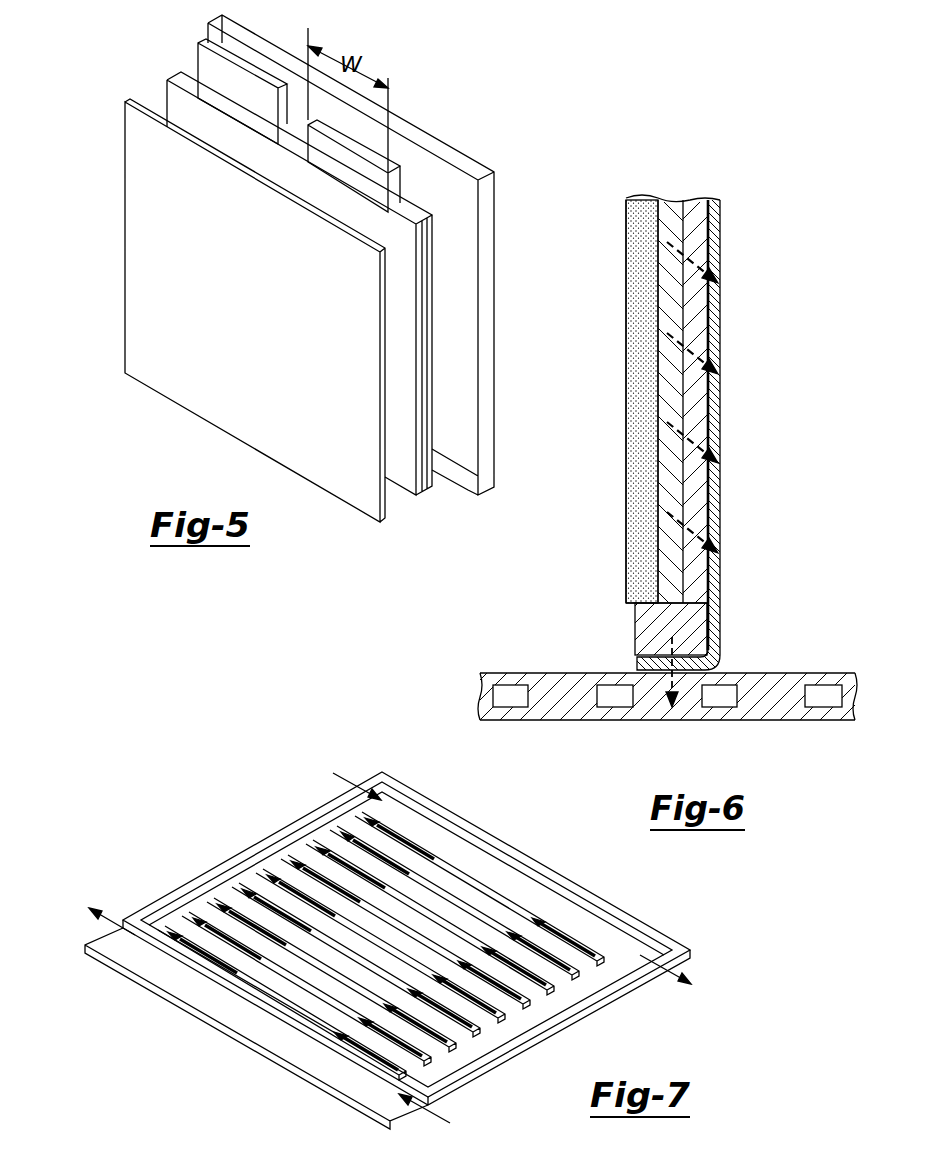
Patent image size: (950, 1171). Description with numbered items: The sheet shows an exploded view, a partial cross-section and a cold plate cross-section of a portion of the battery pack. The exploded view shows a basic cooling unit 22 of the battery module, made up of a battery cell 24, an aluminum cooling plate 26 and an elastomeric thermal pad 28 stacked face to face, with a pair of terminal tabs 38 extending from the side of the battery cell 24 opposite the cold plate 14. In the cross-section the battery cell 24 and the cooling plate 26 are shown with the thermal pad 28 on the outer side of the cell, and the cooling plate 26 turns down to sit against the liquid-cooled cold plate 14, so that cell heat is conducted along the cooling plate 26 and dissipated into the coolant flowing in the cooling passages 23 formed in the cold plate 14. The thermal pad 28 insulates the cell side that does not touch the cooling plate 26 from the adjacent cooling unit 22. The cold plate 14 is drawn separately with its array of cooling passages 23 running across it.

In FIG. 6, the cold plate 14 is at (844, 673).
In FIG. 7, the cold plate 14 is at (665, 934).
In FIG. 6, the cooling unit 22 is at (641, 190).
In FIG. 6, the cooling passages 23 is at (511, 707).
In FIG. 7, the cooling passages 23 is at (172, 912).
In FIG. 5, the battery cell 24 is at (405, 357).
In FIG. 6, the battery cell 24 is at (696, 230).
In FIG. 5, the aluminum cooling plate 26 is at (470, 172).
In FIG. 6, the aluminum cooling plate 26 is at (716, 345).
In FIG. 5, the elastomeric thermal pad 28 is at (155, 280).
In FIG. 6, the elastomeric thermal pad 28 is at (635, 556).
In FIG. 5, the terminal tabs 38 is at (347, 165).